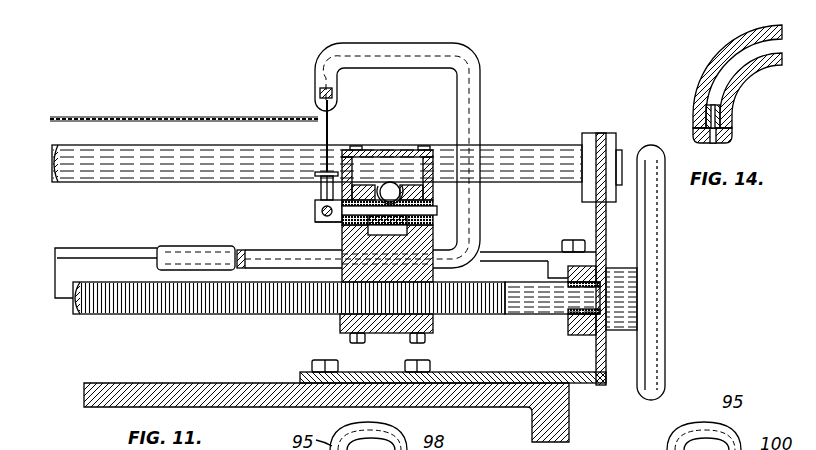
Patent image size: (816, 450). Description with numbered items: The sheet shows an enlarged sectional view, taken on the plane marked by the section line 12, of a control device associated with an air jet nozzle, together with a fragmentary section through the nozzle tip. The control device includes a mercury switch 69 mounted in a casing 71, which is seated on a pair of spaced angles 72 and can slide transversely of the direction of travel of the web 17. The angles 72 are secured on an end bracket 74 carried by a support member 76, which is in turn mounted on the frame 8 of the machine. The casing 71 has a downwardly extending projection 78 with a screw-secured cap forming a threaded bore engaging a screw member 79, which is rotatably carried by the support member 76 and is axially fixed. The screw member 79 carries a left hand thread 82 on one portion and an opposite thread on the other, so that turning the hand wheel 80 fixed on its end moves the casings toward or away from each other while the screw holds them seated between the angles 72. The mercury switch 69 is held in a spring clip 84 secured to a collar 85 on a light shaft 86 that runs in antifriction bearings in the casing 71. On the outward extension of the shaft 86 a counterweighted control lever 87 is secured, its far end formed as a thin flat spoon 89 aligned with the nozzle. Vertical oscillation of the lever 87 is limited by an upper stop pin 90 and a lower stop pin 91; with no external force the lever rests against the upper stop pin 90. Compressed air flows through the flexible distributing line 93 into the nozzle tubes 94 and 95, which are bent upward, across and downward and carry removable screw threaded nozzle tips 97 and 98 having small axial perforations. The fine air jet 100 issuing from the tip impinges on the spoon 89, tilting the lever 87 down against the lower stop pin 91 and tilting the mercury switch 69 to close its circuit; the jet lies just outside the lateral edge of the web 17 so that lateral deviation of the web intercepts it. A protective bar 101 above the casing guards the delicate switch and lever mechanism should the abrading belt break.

In FIG. 11, the frame 8 is at (84, 395).
In FIG. 11, the section line 12 is at (390, 142).
In FIG. 11, the web 17 is at (130, 117).
In FIG. 11, the mercury switch 69 is at (386, 182).
In FIG. 11, the casing 71 is at (437, 232).
In FIG. 11, the angles 72 is at (82, 252).
In FIG. 11, the end bracket 74 is at (600, 133).
In FIG. 11, the support member 76 is at (590, 385).
In FIG. 11, the downwardly extending projection 78 is at (340, 330).
In FIG. 11, the screw member 79 is at (536, 314).
In FIG. 11, the hand wheel 80 is at (660, 352).
In FIG. 11, the left hand thread 82 is at (145, 314).
In FIG. 11, the spring clip 84 is at (400, 186).
In FIG. 11, the collar 85 is at (368, 230).
In FIG. 11, the light shaft 86 is at (438, 210).
In FIG. 11, the control lever 87 is at (316, 206).
In FIG. 11, the spoon 89 is at (318, 172).
In FIG. 11, the upper stop pin 90 is at (321, 190).
In FIG. 11, the lower stop pin 91 is at (318, 219).
In FIG. 11, the distributing line 93 is at (176, 246).
In FIG. 14, the nozzle tube 94 is at (726, 42).
In FIG. 11, the nozzle tube 95 is at (438, 45).
In FIG. 14, the nozzle tube 95 is at (727, 80).
In FIG. 14, the nozzle tip 97 is at (734, 136).
In FIG. 11, the nozzle tip 98 is at (318, 100).
In FIG. 14, the nozzle tip 98 is at (739, 127).
In FIG. 11, the air jet 100 is at (329, 136).
In FIG. 11, the protective bar 101 is at (540, 145).